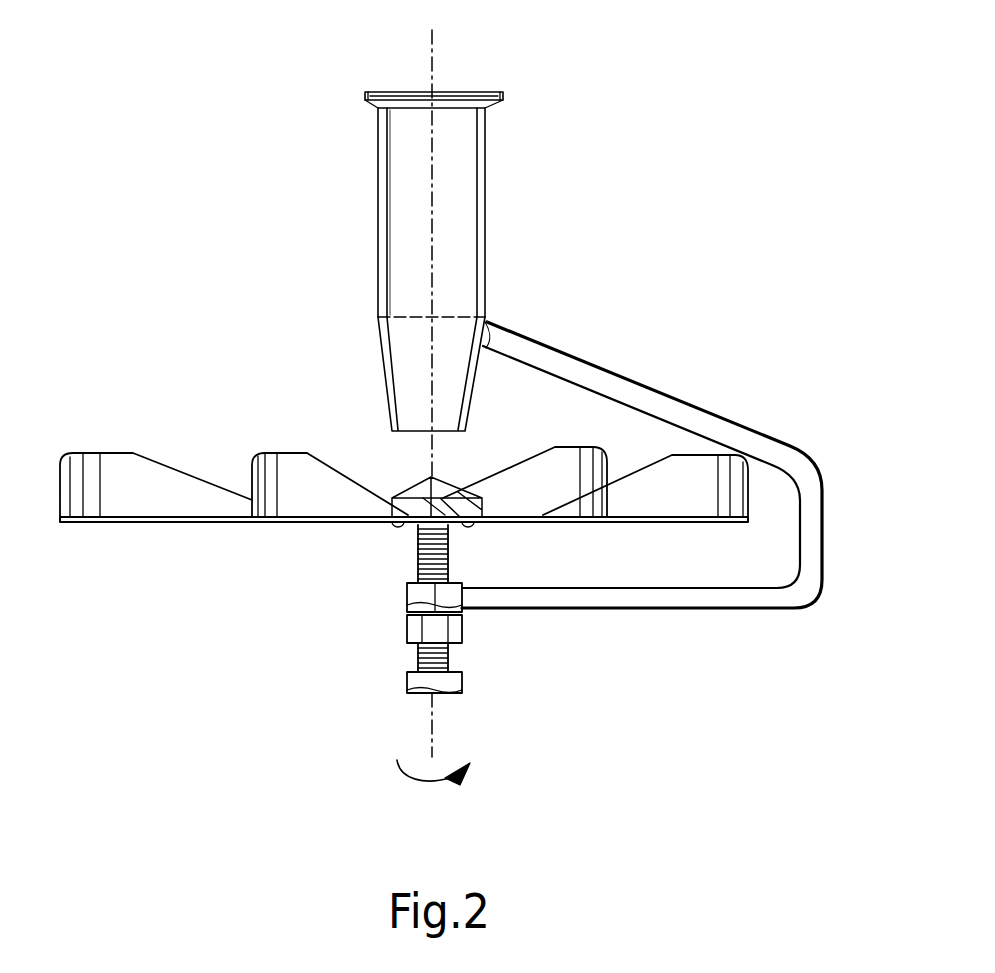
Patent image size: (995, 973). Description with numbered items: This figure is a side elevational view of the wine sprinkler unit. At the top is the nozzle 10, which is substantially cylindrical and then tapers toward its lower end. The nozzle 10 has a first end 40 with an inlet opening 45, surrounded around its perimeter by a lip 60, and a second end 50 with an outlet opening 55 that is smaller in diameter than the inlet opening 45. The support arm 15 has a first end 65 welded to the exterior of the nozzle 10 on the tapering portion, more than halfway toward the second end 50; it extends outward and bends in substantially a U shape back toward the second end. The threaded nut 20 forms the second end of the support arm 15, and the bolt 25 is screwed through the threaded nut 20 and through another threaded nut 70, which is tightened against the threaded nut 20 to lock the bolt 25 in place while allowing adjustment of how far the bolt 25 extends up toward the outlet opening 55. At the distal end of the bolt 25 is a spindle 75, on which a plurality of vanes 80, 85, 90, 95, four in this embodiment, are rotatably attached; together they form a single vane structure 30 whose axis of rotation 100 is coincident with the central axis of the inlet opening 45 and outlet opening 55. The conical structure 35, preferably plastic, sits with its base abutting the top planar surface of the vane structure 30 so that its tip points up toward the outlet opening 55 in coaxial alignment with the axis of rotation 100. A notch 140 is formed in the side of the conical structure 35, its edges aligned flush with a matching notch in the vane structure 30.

The nozzle 10 is at (461, 193).
The support arm 15 is at (808, 513).
The threaded nut 20 is at (449, 597).
The bolt 25 is at (453, 682).
The vane structure 30 is at (337, 522).
The conical structure 35 is at (408, 487).
The first end 40 is at (458, 125).
The inlet opening 45 is at (403, 75).
The second end 50 is at (408, 416).
The outlet opening 55 is at (463, 455).
The lip 60 is at (496, 98).
The first end of support arm 65 is at (487, 331).
The other threaded nut 70 is at (451, 633).
The spindle 75 is at (457, 530).
The vane 80 is at (135, 470).
The vane 85 is at (307, 470).
The vane 90 is at (560, 462).
The vane 95 is at (679, 479).
The axis of rotation 100 is at (432, 62).
The notch 140 is at (443, 500).